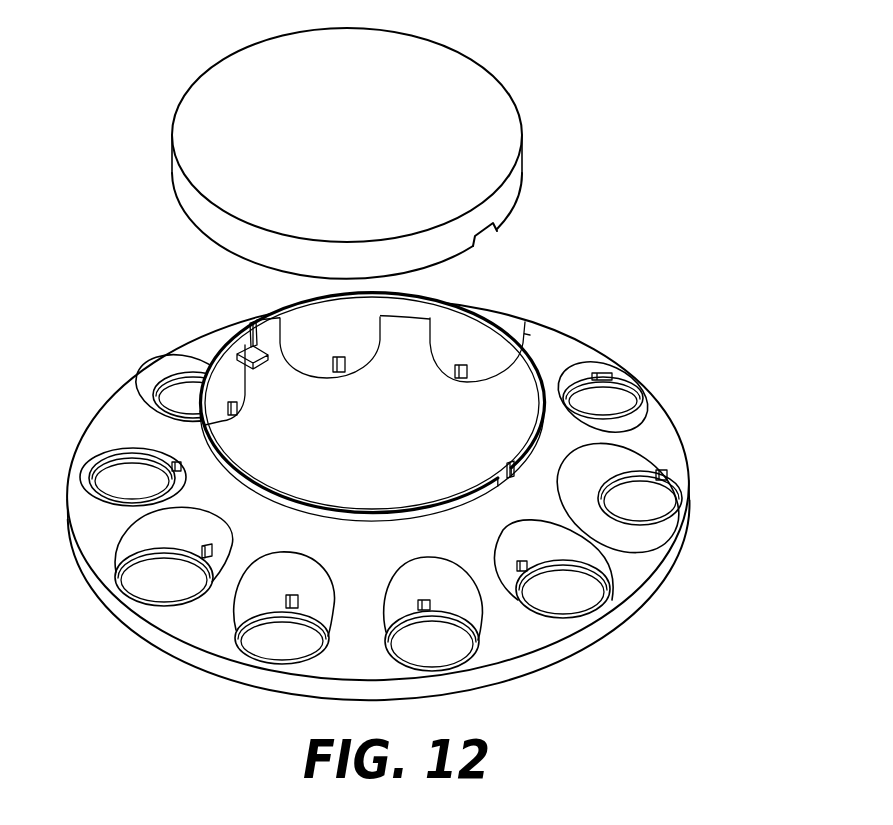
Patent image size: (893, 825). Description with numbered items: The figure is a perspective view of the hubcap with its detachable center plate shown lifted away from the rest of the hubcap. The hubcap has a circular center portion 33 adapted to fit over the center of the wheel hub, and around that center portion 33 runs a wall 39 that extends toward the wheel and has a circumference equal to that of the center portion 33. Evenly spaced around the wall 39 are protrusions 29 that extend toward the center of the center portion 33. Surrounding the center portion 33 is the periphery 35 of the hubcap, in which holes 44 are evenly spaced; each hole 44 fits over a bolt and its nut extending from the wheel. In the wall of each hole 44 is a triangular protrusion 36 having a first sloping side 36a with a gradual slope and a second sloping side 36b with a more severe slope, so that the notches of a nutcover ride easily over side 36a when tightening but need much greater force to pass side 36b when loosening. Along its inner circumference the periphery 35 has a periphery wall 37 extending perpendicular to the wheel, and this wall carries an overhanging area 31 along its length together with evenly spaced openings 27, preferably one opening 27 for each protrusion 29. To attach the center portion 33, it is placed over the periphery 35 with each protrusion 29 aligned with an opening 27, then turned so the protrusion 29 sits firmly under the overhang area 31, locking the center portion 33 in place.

The center portion 33 is at (346, 144).
The wall 39 is at (228, 245).
The protrusion 29 is at (484, 241).
The opening 27 is at (242, 337).
The overhanging area 31 is at (354, 404).
The periphery wall 37 is at (510, 467).
The periphery 35 is at (673, 525).
The protrusion 36 is at (182, 408).
The first sloping side 36a is at (665, 552).
The second sloping side 36b is at (647, 497).
The hole 44 is at (597, 597).